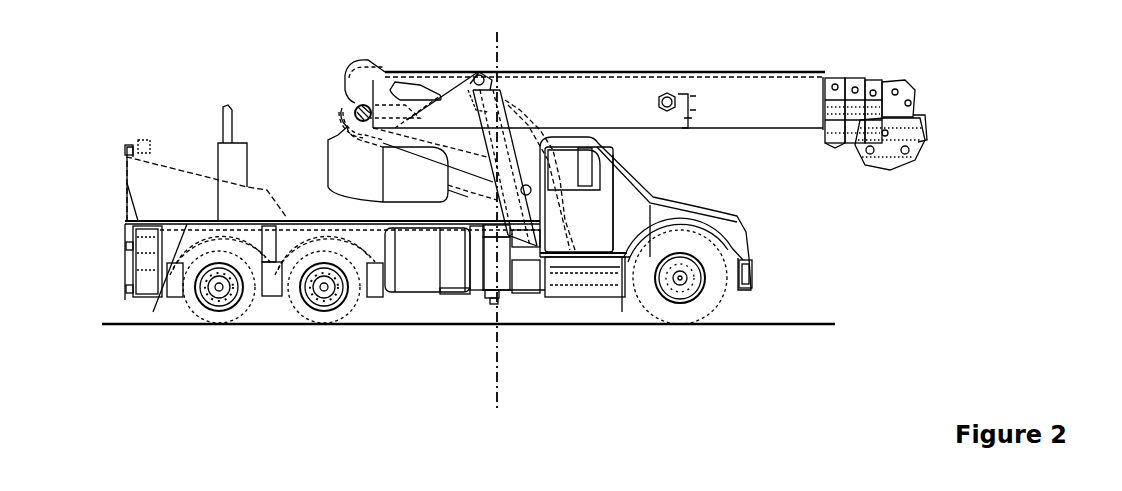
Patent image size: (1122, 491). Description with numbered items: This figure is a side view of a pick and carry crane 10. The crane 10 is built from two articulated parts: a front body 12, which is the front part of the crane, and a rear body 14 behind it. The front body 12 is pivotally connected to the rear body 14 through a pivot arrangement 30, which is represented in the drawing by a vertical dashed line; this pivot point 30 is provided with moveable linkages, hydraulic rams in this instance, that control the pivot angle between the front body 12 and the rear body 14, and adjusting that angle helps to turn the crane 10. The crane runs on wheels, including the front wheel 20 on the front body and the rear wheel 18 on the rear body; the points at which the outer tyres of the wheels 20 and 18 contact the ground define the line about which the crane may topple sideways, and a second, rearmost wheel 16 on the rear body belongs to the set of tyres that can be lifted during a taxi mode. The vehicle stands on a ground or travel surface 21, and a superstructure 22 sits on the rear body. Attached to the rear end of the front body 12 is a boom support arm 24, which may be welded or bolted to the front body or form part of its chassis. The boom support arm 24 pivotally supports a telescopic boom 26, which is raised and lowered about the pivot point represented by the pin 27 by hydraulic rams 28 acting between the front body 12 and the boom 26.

The pick and carry crane 10 is at (952, 210).
The front body 12 is at (735, 197).
The rear body 14 is at (174, 113).
The rear wheel 16 is at (220, 333).
The wheel 18 is at (325, 333).
The wheel 20 is at (687, 340).
The ground surface 21 is at (800, 326).
The superstructure / turntable 22 is at (318, 151).
The boom support arm 24 is at (458, 152).
The boom 26 is at (701, 60).
The pin 27 is at (350, 104).
The hydraulic rams 28 is at (512, 156).
The pivot arrangement 30 is at (488, 315).